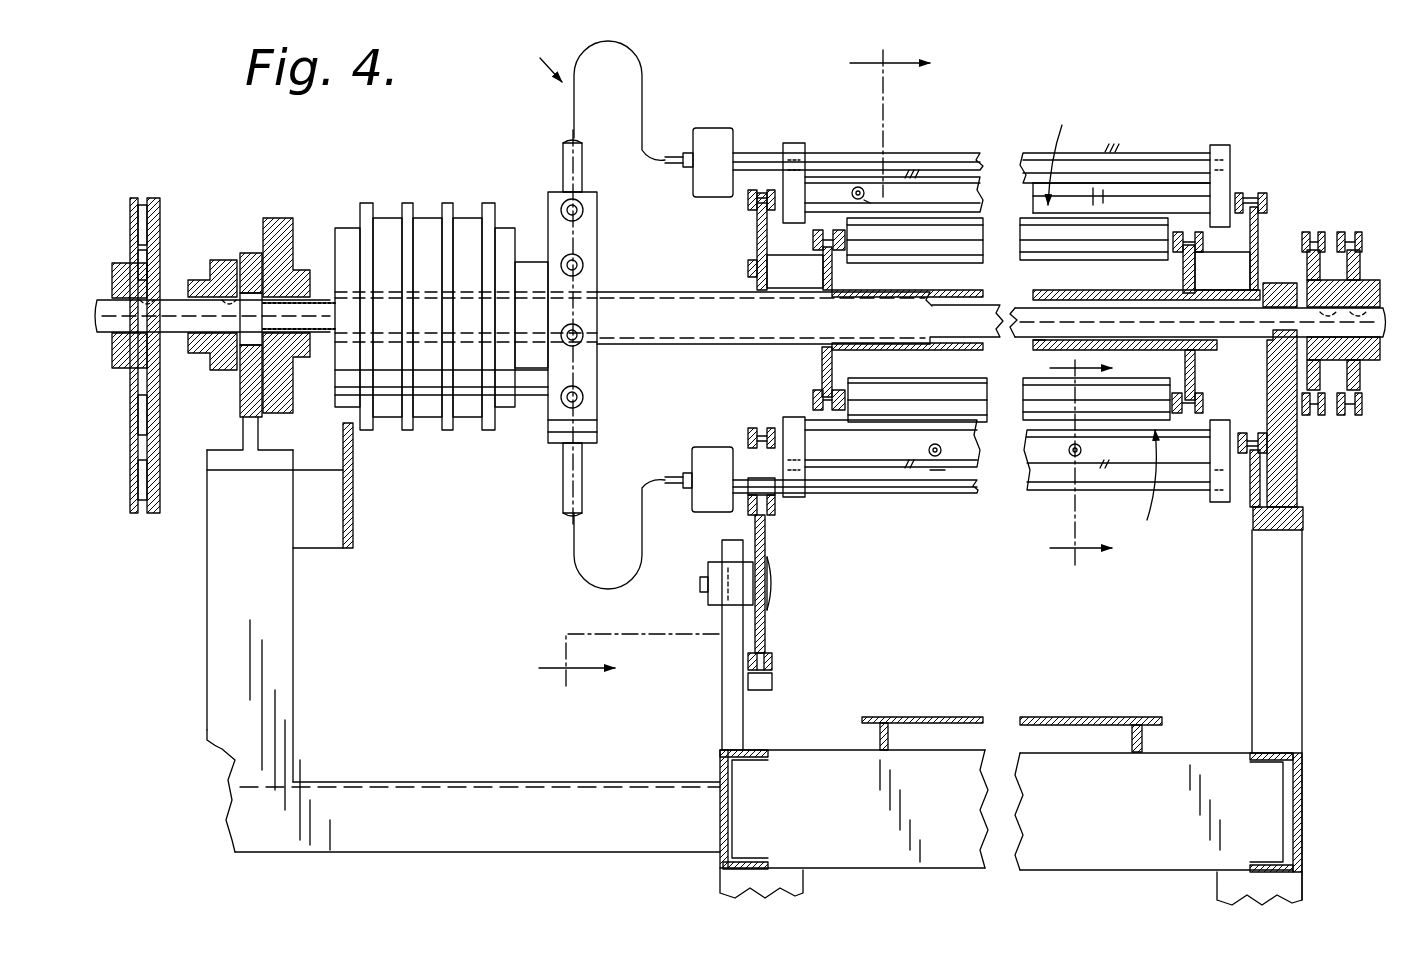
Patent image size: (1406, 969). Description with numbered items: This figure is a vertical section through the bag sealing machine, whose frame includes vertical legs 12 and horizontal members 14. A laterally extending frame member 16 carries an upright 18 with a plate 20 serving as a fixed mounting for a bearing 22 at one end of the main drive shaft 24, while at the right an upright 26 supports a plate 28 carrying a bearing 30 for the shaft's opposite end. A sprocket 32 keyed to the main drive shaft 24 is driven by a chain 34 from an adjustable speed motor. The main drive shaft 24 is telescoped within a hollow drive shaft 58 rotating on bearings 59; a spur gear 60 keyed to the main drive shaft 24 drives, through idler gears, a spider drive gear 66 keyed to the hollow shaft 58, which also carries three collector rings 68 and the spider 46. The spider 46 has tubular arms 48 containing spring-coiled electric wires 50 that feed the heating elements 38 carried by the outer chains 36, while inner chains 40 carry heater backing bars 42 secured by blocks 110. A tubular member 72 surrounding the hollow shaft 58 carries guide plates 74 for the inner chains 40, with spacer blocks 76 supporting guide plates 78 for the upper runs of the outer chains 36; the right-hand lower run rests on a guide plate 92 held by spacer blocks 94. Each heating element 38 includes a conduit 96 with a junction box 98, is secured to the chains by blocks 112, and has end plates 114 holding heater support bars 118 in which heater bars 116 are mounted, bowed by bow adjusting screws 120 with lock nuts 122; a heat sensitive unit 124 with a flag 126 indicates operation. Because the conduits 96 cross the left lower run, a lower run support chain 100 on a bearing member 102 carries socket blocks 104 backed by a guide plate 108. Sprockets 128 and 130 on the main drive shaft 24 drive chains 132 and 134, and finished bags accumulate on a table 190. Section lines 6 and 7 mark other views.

The section line 6- 6 is at (734, 369).
The section line 7- 7 is at (1068, 461).
The vertical legs 12 is at (805, 890).
The horizontal members 14 is at (720, 812).
The laterally extending frame member 16 is at (405, 850).
The upright 18 is at (296, 710).
The plate 20 is at (240, 436).
The bearing 22 is at (250, 255).
The main drive shaft 24 is at (168, 300).
The upright 26 is at (1285, 660).
The plate 28 is at (1285, 455).
The bearing 30 is at (1280, 283).
The sprocket 32 is at (140, 235).
The chain 34 is at (130, 505).
The endless chains 36 is at (752, 190).
The heating elements 38 is at (1098, 312).
The endless chains 40 is at (838, 177).
The heater backing bars 42 is at (1090, 238).
The spider 46 is at (531, 58).
The tubular arms 48 is at (578, 265).
The electric wires 50 is at (645, 60).
The hollow drive shaft 58 is at (665, 298).
The bearings 59 is at (300, 345).
The spur gear 60 is at (225, 262).
The spider drive gear 66 is at (283, 218).
The collector rings 68 is at (465, 218).
The tubular member 72 is at (1095, 270).
The guide plates 74 is at (822, 360).
The spacer blocks 76 is at (790, 270).
The guide plates 78 is at (757, 232).
The guide plate 92 is at (1255, 500).
The spacer blocks 94 is at (1290, 500).
The conduit 96 is at (855, 153).
The junction box 98 is at (712, 130).
The lower run support chain 100 is at (770, 515).
The bearing member 102 is at (720, 712).
The socket blocks 104 is at (760, 690).
The guide plate 108 is at (767, 630).
The blocks 110 is at (845, 395).
The blocks 112 is at (770, 190).
The end plates 114 is at (795, 143).
The heater bars 116 is at (1150, 183).
The heater support bars 118 is at (1085, 183).
The bow adjusting screws 120 is at (935, 458).
The lock nut 122 is at (975, 470).
The heat sensitive unit 124 is at (870, 190).
The flag 126 is at (870, 203).
The sprocket 128 is at (1315, 250).
The sprocket 130 is at (1358, 265).
The chain 132 is at (1320, 232).
The chain 134 is at (1350, 232).
The table 190 is at (1040, 717).